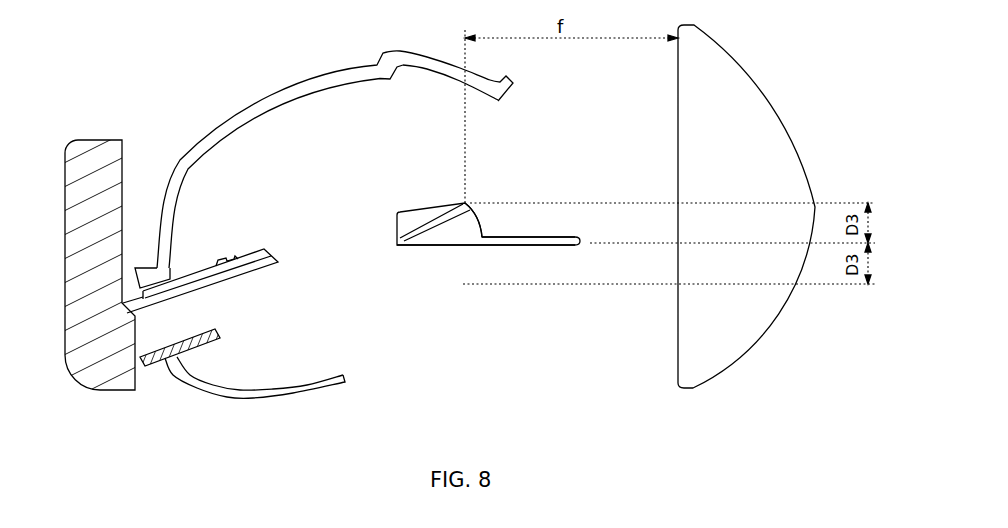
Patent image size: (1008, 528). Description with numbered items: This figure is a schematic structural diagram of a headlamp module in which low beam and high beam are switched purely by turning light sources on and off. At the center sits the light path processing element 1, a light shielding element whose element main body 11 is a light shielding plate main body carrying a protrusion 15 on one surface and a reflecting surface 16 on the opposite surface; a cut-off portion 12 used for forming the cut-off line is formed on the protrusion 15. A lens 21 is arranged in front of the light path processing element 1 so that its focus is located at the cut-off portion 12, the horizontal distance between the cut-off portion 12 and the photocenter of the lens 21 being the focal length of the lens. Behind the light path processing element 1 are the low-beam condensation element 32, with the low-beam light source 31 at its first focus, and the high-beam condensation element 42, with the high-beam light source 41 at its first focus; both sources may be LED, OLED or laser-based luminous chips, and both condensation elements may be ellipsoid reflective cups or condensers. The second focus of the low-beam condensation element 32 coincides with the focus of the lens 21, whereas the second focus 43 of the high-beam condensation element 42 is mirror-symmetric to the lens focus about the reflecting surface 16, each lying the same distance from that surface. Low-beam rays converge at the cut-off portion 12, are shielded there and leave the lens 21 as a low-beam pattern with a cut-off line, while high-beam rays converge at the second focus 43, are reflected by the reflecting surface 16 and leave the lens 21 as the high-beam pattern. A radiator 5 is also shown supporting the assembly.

The light path processing element 1 is at (390, 243).
The radiator 5 is at (120, 382).
The element main body 11 is at (513, 237).
The cut-off portion 12 is at (465, 203).
The protrusion 15 is at (440, 225).
The reflecting surface 16 is at (510, 245).
The lens 21 is at (788, 303).
The low-beam light source 31 is at (236, 256).
The low-beam condensation element 32 is at (208, 140).
The high-beam light source 41 is at (197, 357).
The high-beam condensation element 42 is at (197, 392).
The second focus of high-beam condensation element 43 is at (467, 288).